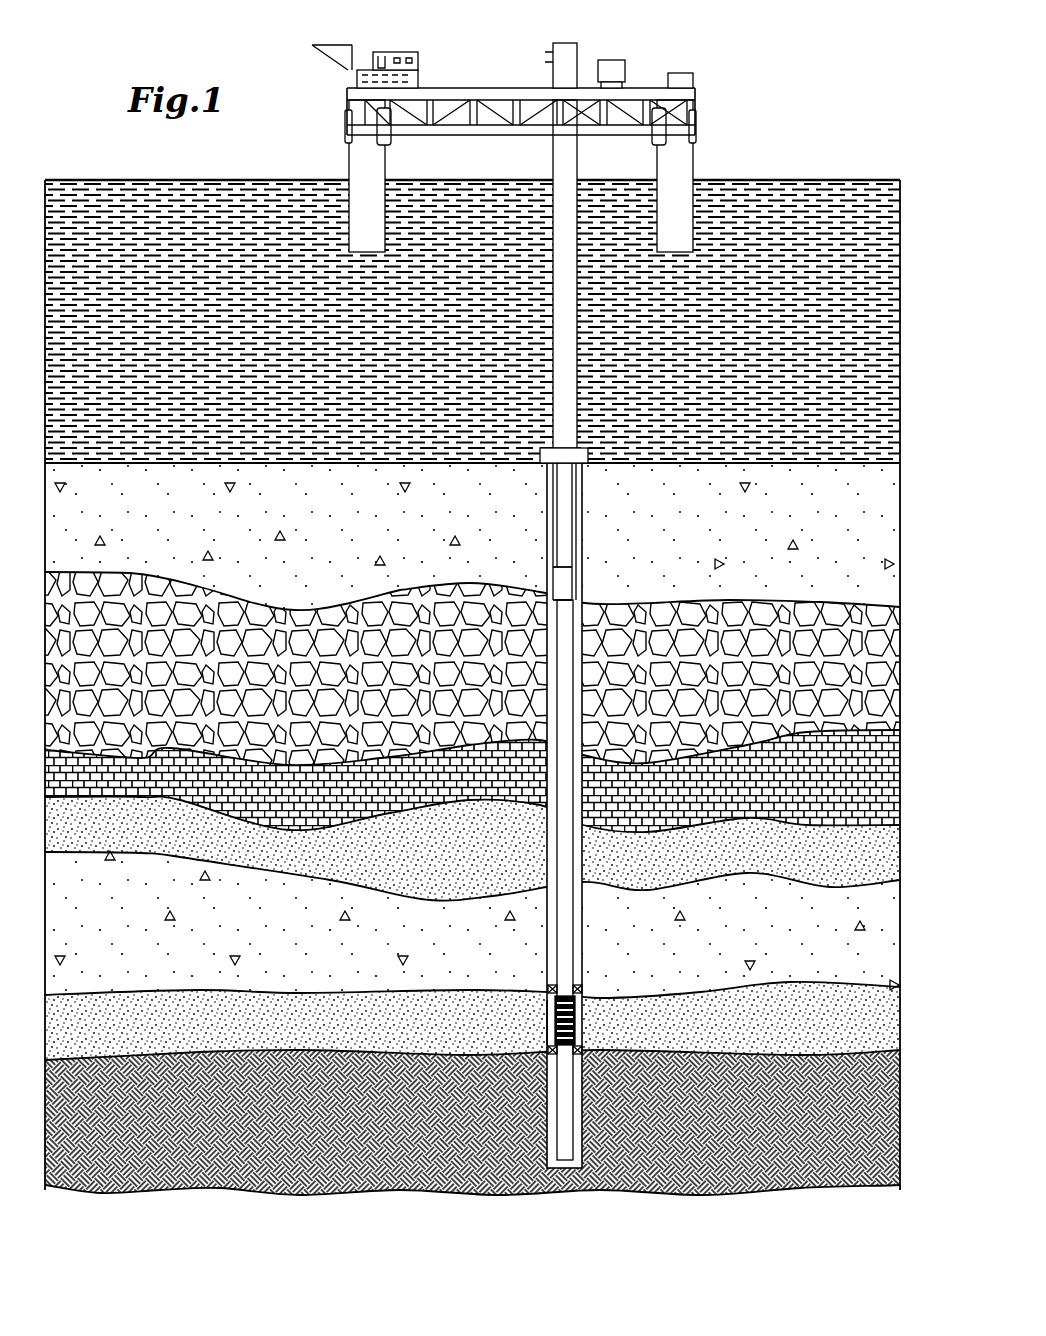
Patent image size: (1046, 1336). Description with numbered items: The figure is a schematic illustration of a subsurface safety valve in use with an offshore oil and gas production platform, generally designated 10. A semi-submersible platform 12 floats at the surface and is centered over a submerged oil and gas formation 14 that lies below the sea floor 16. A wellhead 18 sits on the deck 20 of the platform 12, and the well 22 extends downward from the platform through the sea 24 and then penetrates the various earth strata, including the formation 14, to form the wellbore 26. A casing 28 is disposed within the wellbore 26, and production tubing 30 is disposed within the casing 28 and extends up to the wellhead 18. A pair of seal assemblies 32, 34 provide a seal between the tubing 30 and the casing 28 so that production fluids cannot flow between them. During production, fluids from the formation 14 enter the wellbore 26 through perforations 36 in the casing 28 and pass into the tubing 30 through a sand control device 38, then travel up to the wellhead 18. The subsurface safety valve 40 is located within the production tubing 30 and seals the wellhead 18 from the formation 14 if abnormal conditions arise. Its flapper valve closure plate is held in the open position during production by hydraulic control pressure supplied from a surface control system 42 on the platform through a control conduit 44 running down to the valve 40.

The subsurface safety valve in use with an offshore oil and gas production platform 10 is at (790, 46).
The semi-submersible platform 12 is at (695, 130).
The submerged oil and gas formation 14 is at (472, 1141).
The sea floor 16 is at (818, 468).
The wellhead 18 is at (563, 42).
The deck 20 is at (693, 97).
The well 22 is at (553, 303).
The sea 24 is at (472, 321).
The wellbore 26 is at (578, 518).
The casing 28 is at (583, 555).
The production tubing 30 is at (562, 545).
The seal assembly 32 is at (583, 988).
The seal assembly 34 is at (583, 1052).
The perforations 36 is at (583, 1012).
The sand control device 38 is at (553, 1022).
The subsurface safety valve 40 is at (570, 590).
The surface control system 42 is at (615, 62).
The control conduit 44 is at (548, 502).